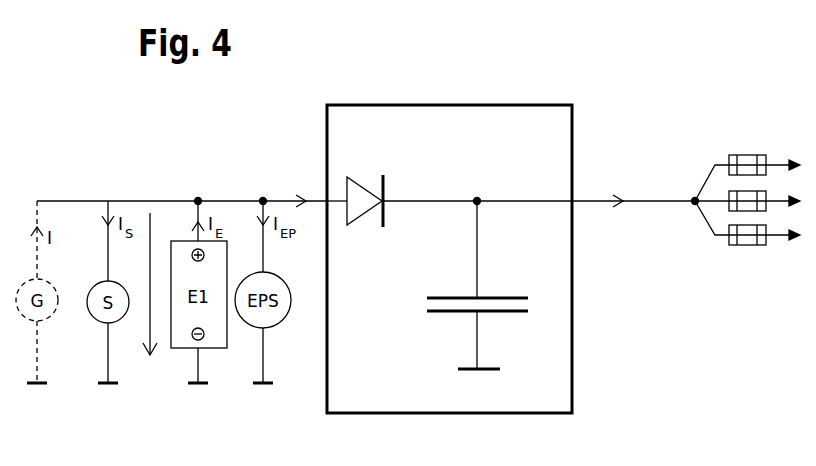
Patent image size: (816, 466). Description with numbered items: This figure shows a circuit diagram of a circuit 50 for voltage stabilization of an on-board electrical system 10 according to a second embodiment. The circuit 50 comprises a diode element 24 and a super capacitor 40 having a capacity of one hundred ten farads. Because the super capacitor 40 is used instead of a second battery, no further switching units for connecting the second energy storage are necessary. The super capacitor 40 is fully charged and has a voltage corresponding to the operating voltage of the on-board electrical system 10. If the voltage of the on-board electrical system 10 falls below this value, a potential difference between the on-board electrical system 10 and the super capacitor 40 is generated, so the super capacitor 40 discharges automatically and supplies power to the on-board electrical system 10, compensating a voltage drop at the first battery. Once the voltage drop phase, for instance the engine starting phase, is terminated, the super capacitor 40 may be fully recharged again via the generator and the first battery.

The on-board electrical system 10 is at (732, 149).
The diode element 24 is at (360, 197).
The super capacitor 40 is at (527, 304).
The circuit 50 is at (518, 100).